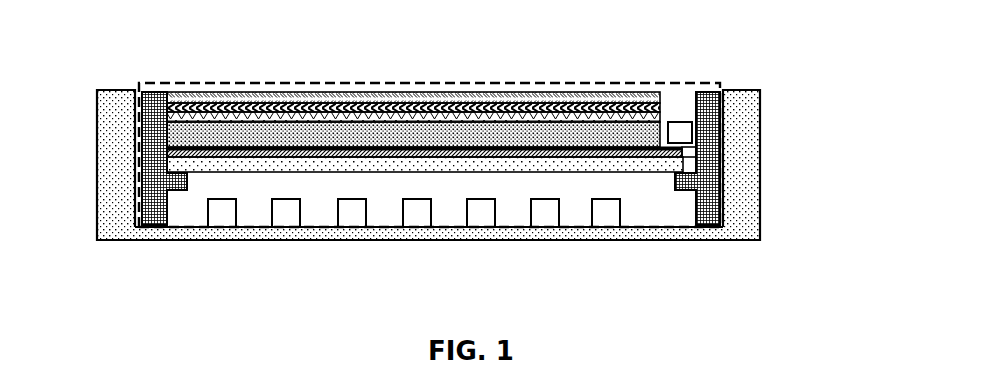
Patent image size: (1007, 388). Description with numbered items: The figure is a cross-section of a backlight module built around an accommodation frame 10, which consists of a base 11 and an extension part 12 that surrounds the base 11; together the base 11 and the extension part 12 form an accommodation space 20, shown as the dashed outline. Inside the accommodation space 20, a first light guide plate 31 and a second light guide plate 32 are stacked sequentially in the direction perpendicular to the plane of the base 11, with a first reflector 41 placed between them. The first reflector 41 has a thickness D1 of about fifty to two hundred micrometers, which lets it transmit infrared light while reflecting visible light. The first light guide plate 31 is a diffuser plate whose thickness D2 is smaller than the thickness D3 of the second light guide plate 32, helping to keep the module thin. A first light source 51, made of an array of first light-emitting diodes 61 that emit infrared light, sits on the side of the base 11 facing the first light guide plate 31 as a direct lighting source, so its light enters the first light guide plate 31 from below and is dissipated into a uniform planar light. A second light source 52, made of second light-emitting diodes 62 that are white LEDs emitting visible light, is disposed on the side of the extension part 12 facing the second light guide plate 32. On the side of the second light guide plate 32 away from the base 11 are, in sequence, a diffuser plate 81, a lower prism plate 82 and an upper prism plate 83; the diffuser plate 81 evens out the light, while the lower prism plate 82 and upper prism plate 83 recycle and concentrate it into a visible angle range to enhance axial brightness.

The accommodation frame 10 is at (496, 196).
The base 11 is at (660, 242).
The extension part 12 is at (748, 175).
The accommodation space 20 is at (483, 83).
The first light guide plate 31 is at (519, 165).
The second light guide plate 32 is at (187, 82).
The first reflector 41 is at (207, 165).
The first light source 51 is at (414, 248).
The first light-emitting diodes 61 is at (352, 205).
The second light source 52 is at (729, 88).
The second light-emitting diodes 62 is at (682, 132).
The diffuser plate 81 is at (251, 112).
The lower prism plate 82 is at (310, 106).
The upper prism plate 83 is at (388, 97).
The thickness of the first reflector D1 is at (760, 147).
The thickness of the first light guide plate D2 is at (140, 172).
The thickness of the second light guide plate D3 is at (140, 147).